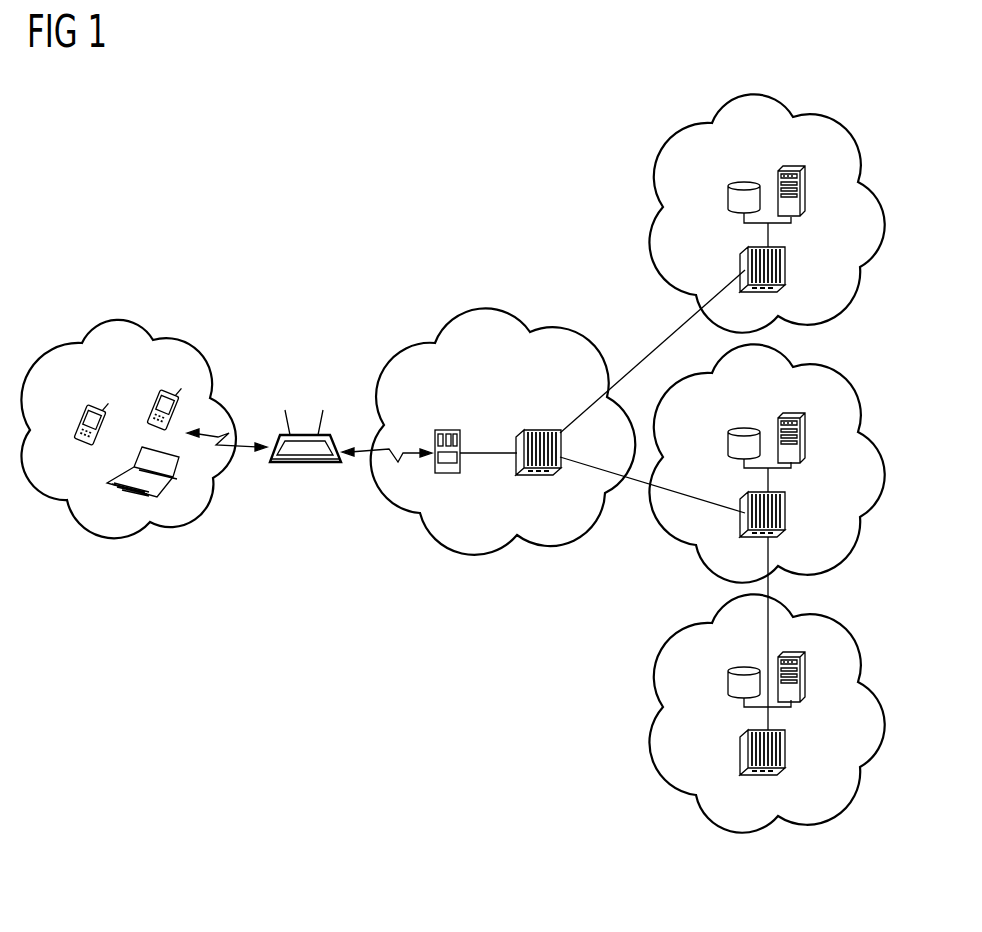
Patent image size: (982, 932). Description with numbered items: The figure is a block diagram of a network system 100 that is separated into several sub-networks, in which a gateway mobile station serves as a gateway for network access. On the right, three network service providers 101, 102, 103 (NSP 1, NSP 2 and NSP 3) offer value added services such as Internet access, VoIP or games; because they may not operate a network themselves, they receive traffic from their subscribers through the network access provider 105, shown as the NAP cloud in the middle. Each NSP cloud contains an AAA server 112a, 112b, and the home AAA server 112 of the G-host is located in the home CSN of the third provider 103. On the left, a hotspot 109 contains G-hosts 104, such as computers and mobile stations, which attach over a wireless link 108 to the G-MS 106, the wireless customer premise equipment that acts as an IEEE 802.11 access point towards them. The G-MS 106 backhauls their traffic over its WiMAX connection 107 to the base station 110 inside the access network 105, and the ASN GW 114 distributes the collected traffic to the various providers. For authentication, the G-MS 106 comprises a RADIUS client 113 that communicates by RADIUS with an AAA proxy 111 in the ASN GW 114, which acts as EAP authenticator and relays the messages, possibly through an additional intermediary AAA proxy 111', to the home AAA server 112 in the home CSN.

The network system 100 is at (160, 165).
The network service provider NSP1 101 is at (851, 556).
The network service provider NSP2 102 is at (754, 94).
The network service provider NSP3 103 is at (745, 826).
The G-host 104 is at (152, 411).
The network access provider 105 is at (484, 314).
The gateway mobile station 106 is at (302, 500).
The WiMAX connection 107 is at (404, 446).
The wireless link 108 is at (240, 450).
The hotspot 109 is at (118, 320).
The base station 110 is at (448, 428).
The AAA proxy 111 is at (621, 525).
The intermediary AAA proxy 111' is at (652, 426).
The home AAA server 112 is at (735, 698).
The AAA server 112a is at (745, 427).
The AAA server 112b is at (744, 180).
The RADIUS client 113 is at (341, 474).
The ASN GW 114 is at (542, 428).